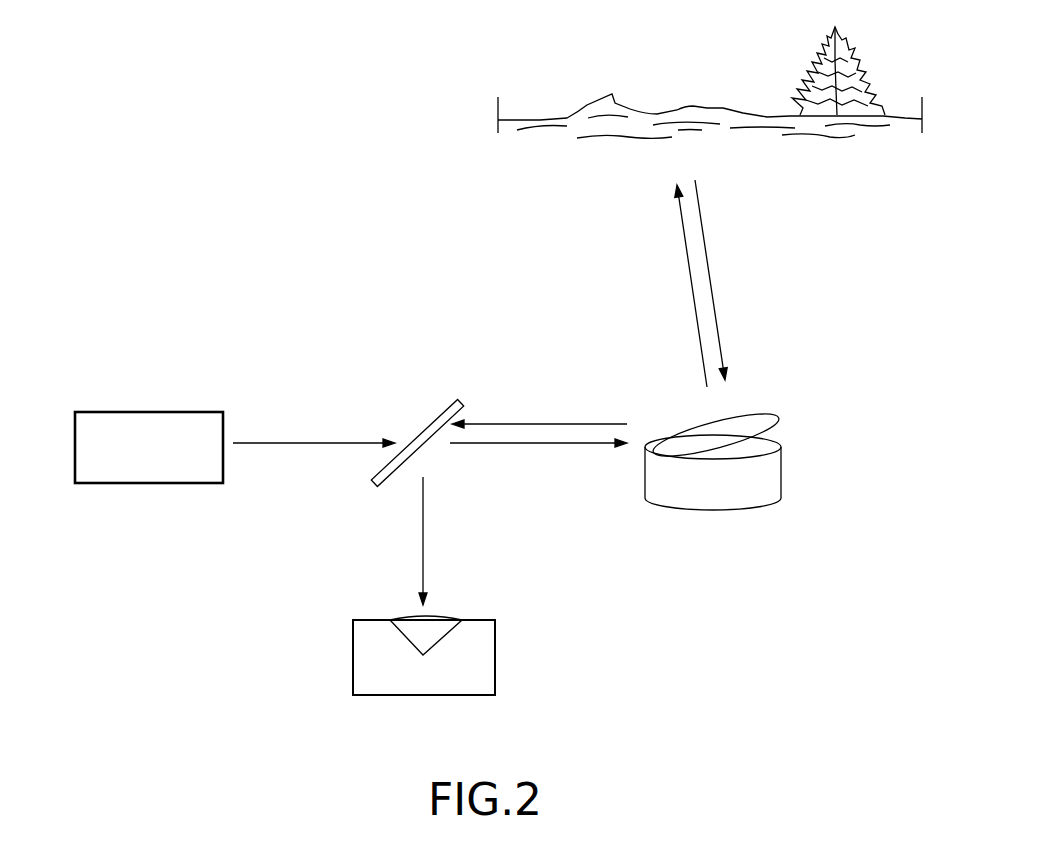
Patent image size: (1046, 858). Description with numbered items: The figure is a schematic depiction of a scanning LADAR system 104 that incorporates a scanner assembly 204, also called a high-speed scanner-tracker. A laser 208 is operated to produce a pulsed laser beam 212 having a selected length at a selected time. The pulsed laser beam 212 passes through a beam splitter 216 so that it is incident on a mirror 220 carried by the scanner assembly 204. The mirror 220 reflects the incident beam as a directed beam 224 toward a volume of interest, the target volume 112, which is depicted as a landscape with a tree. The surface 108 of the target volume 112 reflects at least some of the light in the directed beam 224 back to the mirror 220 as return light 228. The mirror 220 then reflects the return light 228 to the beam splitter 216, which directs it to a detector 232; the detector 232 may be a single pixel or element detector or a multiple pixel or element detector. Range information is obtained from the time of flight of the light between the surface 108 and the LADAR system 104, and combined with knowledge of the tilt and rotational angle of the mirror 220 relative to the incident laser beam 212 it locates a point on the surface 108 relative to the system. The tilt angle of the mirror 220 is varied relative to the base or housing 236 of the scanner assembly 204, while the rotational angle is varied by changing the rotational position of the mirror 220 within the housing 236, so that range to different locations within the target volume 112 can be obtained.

The scanning LADAR system 104 is at (656, 672).
The surface 108 is at (723, 108).
The target volume 112 is at (552, 82).
The scanner assembly 204 is at (757, 470).
The laser 208 is at (190, 412).
The laser beam 212 is at (302, 445).
The beam splitter 216 is at (415, 437).
The mirror 220 is at (748, 423).
The directed beam 224 is at (690, 283).
The return light 228 is at (713, 295).
The detector 232 is at (362, 652).
The housing 236 is at (737, 497).